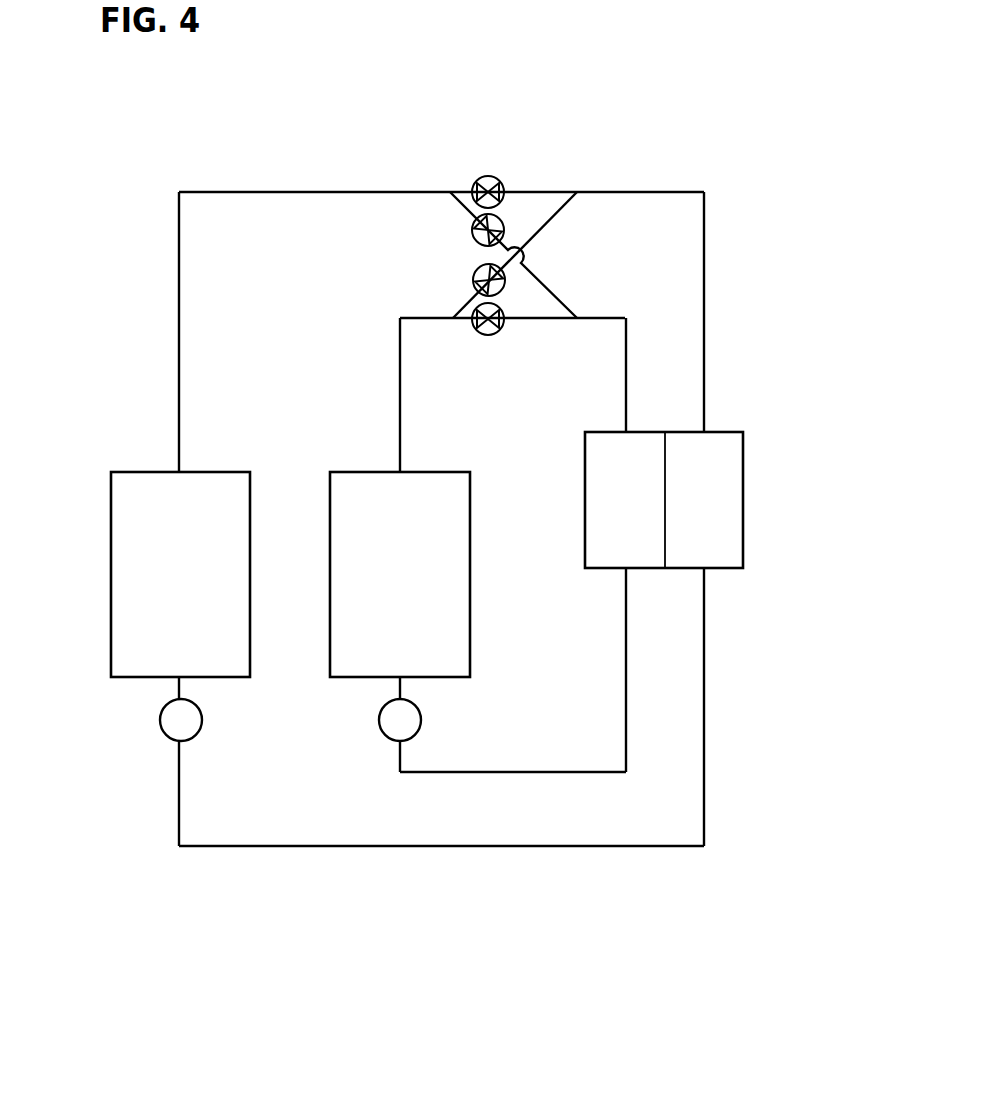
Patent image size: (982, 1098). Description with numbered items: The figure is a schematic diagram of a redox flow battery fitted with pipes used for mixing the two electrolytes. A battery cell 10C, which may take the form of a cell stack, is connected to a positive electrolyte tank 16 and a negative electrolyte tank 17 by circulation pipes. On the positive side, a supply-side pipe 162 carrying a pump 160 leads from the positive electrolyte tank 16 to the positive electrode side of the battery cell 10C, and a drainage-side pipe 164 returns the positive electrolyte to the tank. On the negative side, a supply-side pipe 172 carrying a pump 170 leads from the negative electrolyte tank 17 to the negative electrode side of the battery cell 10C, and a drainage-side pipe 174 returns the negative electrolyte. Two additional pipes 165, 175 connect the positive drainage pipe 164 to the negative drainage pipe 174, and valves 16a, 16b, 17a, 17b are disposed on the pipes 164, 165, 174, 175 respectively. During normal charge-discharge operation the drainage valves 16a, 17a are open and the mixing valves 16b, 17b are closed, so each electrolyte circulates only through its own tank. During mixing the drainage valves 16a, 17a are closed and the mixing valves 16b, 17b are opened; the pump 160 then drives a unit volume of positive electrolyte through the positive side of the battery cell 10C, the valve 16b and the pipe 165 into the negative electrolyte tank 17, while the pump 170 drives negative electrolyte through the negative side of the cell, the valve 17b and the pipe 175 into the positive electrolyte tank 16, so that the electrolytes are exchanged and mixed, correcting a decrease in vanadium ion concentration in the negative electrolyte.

The battery cell 10C is at (719, 431).
The positive electrolyte tank 16 is at (115, 505).
The valve 16a is at (478, 180).
The valve 16b is at (474, 272).
The negative electrolyte tank 17 is at (462, 595).
The valve 17a is at (487, 336).
The valve 17b is at (470, 235).
The pump 160 is at (160, 718).
The pipe 162 is at (467, 847).
The pipe 164 is at (298, 191).
The pipe 165 is at (462, 302).
The pump 170 is at (381, 722).
The pipe 172 is at (550, 771).
The pipe 174 is at (548, 319).
The pipe 175 is at (540, 277).